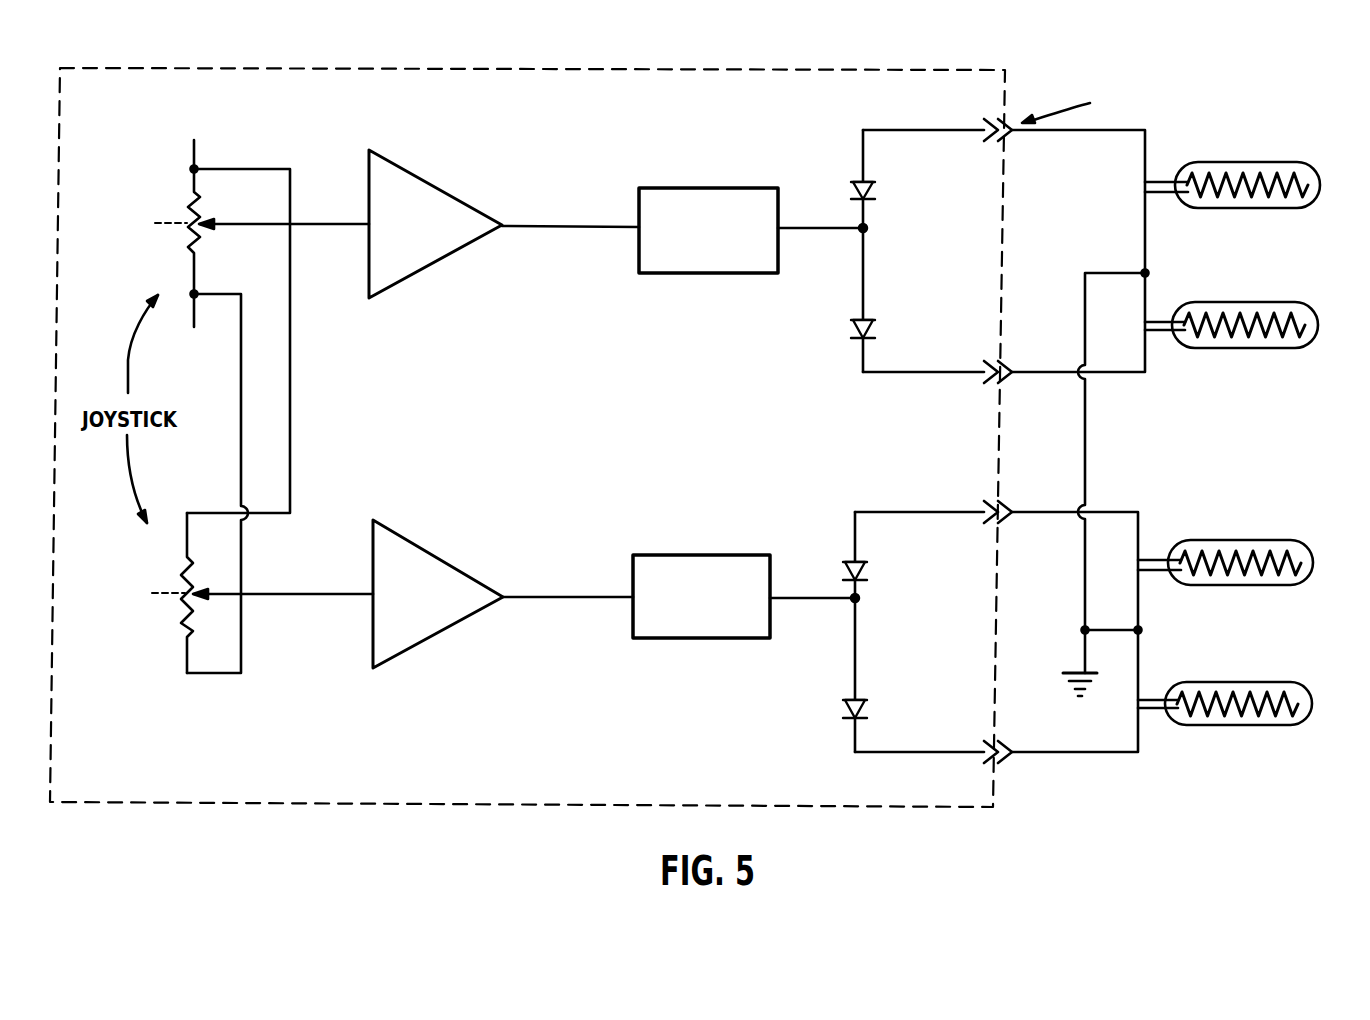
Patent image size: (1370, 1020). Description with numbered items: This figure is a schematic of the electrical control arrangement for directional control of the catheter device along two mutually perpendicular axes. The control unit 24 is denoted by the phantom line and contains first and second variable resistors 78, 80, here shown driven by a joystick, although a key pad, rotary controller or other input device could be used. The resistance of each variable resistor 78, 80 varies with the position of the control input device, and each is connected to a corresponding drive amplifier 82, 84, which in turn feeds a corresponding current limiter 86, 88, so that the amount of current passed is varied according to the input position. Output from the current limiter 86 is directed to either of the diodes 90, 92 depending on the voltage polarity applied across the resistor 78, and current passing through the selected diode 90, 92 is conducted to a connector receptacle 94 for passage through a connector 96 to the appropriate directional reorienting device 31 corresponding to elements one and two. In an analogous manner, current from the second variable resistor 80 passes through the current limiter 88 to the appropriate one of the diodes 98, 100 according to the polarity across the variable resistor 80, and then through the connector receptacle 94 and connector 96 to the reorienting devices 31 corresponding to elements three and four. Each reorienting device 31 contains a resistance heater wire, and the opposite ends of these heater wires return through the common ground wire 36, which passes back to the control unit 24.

The control unit 24 is at (770, 60).
The first variable resistor 78 is at (198, 233).
The second variable resistor 80 is at (192, 616).
The drive amplifier 82 is at (433, 269).
The drive amplifier 84 is at (437, 633).
The current limiter 86 is at (639, 252).
The current limiter 88 is at (633, 617).
The diode 90 is at (850, 188).
The diode 92 is at (850, 328).
The connector receptacle 94 is at (994, 117).
The connector 96 is at (1015, 131).
The diode 98 is at (846, 572).
The diode 100 is at (845, 705).
The ground wire 36 is at (1085, 452).
The directional reorienting device 31 is at (1302, 210).